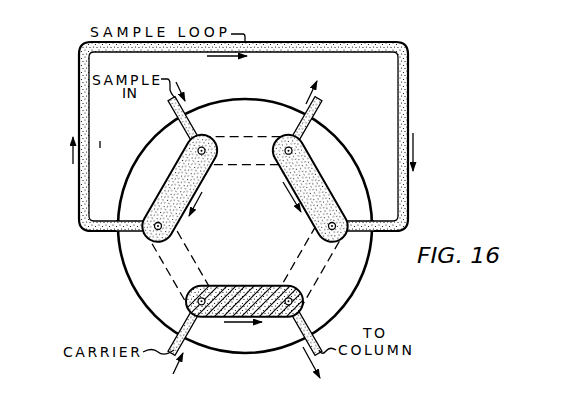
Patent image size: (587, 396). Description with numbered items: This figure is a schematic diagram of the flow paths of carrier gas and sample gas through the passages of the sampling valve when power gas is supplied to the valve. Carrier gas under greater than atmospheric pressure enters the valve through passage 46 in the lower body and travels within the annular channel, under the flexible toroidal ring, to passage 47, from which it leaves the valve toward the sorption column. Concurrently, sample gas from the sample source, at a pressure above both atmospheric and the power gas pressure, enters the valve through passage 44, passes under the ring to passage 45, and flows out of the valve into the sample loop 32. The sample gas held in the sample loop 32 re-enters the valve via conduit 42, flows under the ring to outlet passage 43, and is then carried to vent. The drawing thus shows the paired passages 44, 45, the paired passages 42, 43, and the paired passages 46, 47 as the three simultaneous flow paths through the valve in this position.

The sample loop 32 is at (320, 43).
The conduit 42 is at (358, 229).
The outlet passage 43 is at (318, 103).
The passage 44 is at (175, 112).
The passage 45 is at (127, 230).
The passage 46 is at (178, 341).
The passage 47 is at (318, 340).